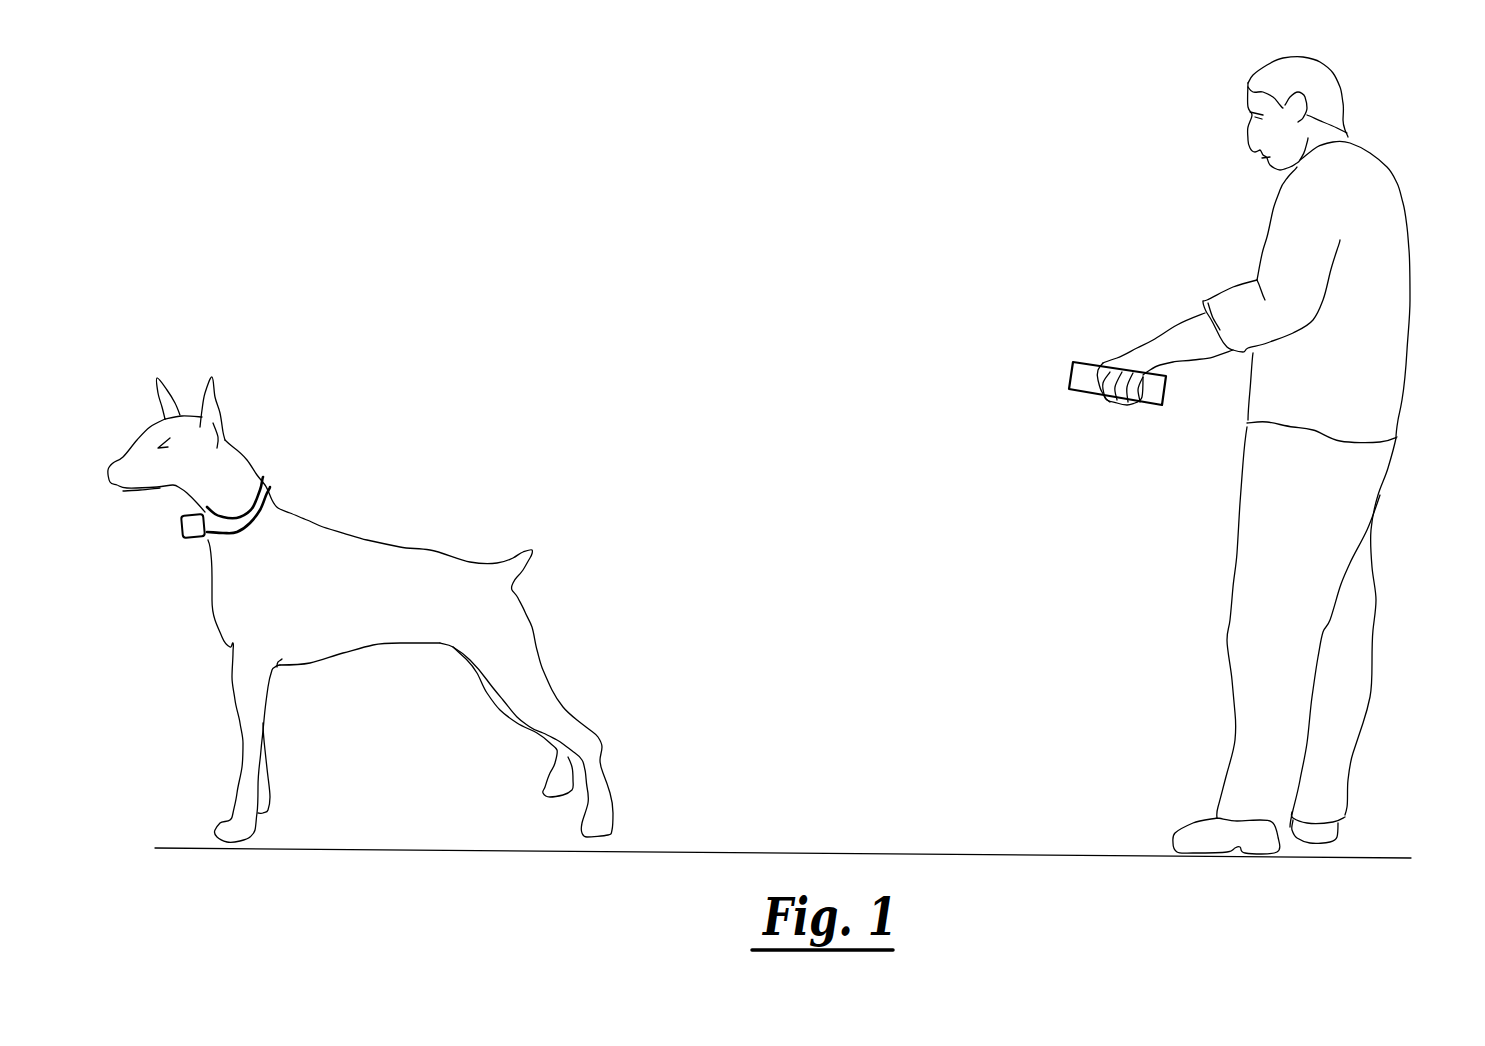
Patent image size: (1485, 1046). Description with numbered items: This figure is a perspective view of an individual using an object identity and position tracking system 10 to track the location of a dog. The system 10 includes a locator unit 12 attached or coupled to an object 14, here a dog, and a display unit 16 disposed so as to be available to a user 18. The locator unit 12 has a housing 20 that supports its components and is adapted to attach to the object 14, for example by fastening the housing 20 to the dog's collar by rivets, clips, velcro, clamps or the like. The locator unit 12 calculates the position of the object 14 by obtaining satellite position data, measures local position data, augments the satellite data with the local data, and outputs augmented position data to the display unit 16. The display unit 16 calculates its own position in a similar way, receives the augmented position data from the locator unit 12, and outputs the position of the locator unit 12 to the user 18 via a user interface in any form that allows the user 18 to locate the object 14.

The object identity and position tracking system 10 is at (612, 238).
The locator unit 12 is at (268, 476).
The object 14 is at (401, 533).
The display unit 16 is at (1077, 358).
The user 18 is at (1400, 188).
The housing 20 is at (180, 527).